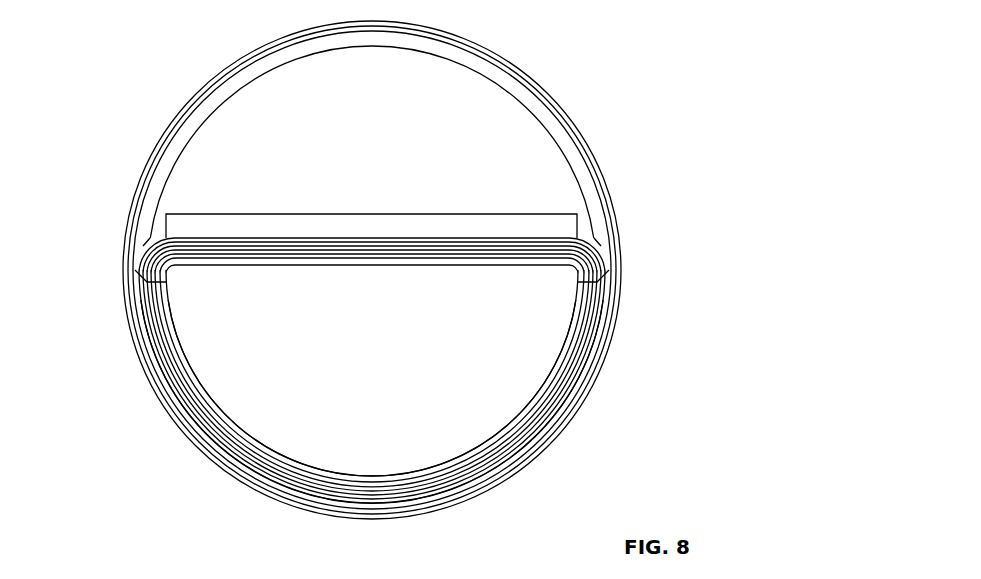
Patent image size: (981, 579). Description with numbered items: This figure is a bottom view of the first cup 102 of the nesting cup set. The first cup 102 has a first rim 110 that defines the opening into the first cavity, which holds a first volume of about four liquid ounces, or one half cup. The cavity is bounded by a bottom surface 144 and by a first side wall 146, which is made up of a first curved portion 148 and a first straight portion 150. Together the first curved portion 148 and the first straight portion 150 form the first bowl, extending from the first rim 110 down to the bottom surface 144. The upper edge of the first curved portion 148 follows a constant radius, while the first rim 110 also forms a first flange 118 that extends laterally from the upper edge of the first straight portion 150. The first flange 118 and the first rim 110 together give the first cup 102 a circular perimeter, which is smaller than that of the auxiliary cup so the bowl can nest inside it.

The first cup 102 is at (586, 38).
The first rim 110 is at (560, 108).
The first flange 118 is at (240, 137).
The first straight portion 150 is at (507, 247).
The first side wall 146 is at (160, 248).
The bottom surface 144 is at (228, 385).
The first curved portion 148 is at (543, 428).